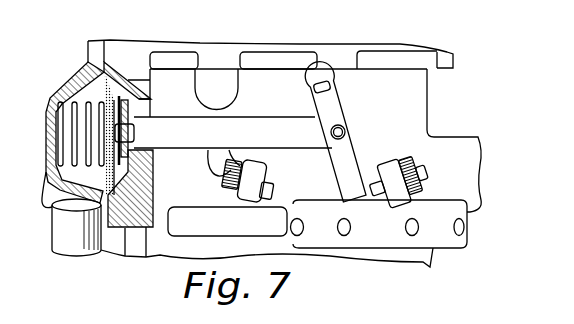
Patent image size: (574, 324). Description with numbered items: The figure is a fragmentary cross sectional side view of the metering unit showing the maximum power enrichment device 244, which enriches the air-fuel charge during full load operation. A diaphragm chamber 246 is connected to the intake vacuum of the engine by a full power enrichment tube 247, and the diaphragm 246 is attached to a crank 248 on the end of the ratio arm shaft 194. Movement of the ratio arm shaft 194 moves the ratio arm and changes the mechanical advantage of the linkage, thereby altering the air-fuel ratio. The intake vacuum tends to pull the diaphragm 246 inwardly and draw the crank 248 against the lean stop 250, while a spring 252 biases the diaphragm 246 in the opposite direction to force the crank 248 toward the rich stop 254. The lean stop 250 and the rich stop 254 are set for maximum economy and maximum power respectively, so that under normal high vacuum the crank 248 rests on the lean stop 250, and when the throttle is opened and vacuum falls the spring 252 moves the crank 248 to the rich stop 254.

The maximum power enrichment device 244 is at (128, 43).
The diaphragm chamber 246 is at (97, 82).
The spring 252 is at (85, 107).
The full power enrichment tube 247 is at (62, 231).
The ratio arm shaft 194 is at (333, 88).
The crank 248 is at (355, 163).
The lean stop 250 is at (262, 175).
The rich stop 254 is at (423, 174).